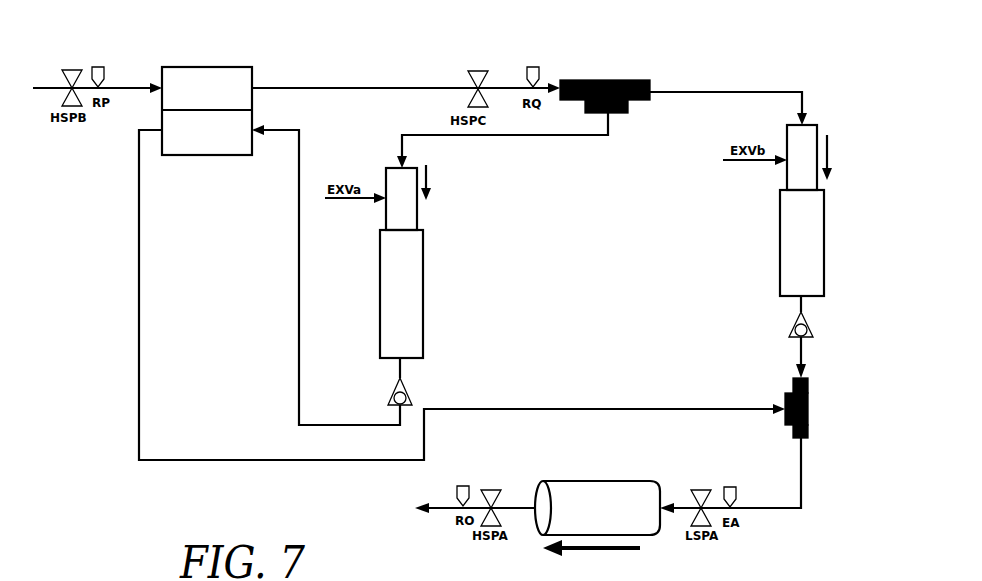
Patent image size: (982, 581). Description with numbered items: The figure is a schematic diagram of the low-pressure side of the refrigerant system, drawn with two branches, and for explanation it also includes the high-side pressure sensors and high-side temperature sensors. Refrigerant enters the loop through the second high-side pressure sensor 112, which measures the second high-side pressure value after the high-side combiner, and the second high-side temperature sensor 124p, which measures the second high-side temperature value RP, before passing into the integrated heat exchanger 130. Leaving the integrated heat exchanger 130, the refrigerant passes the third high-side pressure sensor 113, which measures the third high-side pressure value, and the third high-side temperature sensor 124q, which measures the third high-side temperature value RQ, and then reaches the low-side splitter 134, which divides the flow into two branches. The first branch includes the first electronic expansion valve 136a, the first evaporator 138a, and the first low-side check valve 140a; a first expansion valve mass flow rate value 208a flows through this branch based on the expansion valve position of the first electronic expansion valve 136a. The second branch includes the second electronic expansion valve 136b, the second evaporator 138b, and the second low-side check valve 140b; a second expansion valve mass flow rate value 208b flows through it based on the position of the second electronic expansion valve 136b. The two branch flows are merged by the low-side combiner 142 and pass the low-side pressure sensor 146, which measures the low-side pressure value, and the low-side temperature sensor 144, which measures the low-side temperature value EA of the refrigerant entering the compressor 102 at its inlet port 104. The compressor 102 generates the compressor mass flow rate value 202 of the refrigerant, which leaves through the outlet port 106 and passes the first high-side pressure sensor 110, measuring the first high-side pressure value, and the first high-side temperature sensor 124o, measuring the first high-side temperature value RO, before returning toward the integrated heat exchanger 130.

The compressor 102 is at (596, 481).
The inlet port 104 is at (660, 525).
The outlet port 106 is at (540, 525).
The first high-side pressure sensor 110 is at (493, 490).
The second high-side pressure sensor 112 is at (70, 70).
The third high-side pressure sensor 113 is at (480, 71).
The first high-side temperature sensor 124o is at (463, 485).
The second high-side temperature sensor 124p is at (98, 66).
The third high-side temperature sensor 124q is at (533, 66).
The integrated heat exchanger 130 is at (208, 67).
The low-side splitter 134 is at (605, 80).
The first electronic expansion valve 136a is at (417, 215).
The second electronic expansion valve 136b is at (802, 157).
The first evaporator 138a is at (423, 278).
The second evaporator 138b is at (885, 210).
The first low-side check valve 140a is at (395, 390).
The second low-side check valve 140b is at (795, 323).
The low-side combiner 142 is at (793, 385).
The low-side temperature sensor 144 is at (730, 487).
The low-side pressure sensor 146 is at (700, 490).
The compressor mass flow rate value 202 is at (625, 579).
The first expansion valve mass flow rate value 208a is at (489, 199).
The second expansion valve mass flow rate value 208b is at (890, 167).